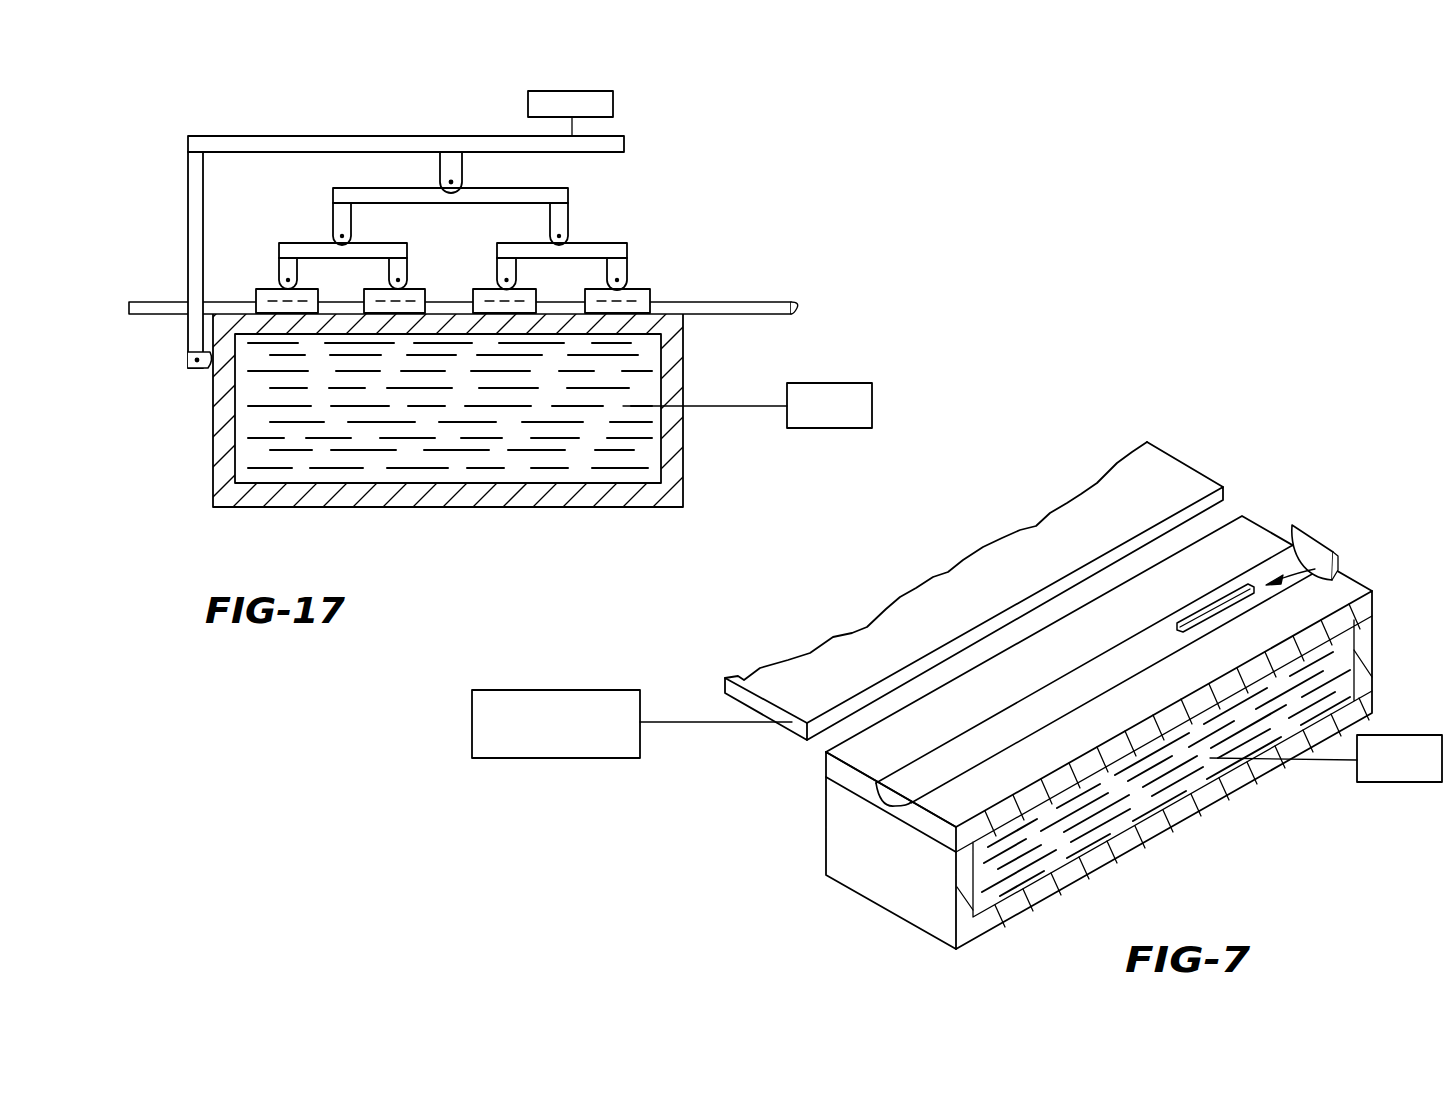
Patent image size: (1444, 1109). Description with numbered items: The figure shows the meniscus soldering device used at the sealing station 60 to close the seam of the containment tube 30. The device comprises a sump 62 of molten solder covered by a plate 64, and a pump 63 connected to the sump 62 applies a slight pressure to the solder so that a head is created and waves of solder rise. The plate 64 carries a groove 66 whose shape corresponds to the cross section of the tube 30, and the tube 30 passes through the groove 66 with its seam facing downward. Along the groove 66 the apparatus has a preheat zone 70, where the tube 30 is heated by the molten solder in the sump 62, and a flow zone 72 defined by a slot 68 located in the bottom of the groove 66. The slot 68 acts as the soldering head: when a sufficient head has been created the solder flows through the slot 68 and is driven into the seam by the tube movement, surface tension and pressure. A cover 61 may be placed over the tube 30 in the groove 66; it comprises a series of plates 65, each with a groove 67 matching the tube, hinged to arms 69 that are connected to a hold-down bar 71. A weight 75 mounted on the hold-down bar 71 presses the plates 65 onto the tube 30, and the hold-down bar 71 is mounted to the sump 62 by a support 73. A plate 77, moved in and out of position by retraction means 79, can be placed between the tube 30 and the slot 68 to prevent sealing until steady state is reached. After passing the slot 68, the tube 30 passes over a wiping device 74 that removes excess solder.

In FIG. 17, the containment tube 30 is at (150, 302).
In FIG. 7, the sealing station 60 is at (1262, 497).
In FIG. 17, the cover 61 is at (291, 130).
In FIG. 17, the sump 62 is at (668, 488).
In FIG. 7, the sump 62 is at (1238, 776).
In FIG. 17, the pump 63 is at (818, 428).
In FIG. 7, the pump 63 is at (1390, 782).
In FIG. 7, the plate 64 is at (830, 762).
In FIG. 17, the plates 65 is at (370, 282).
In FIG. 7, the groove 66 is at (915, 787).
In FIG. 17, the groove 67 is at (650, 292).
In FIG. 7, the slot 68 is at (1213, 612).
In FIG. 17, the arms 69 is at (497, 252).
In FIG. 7, the preheat zone 70 is at (1006, 724).
In FIG. 17, the hold-down bar 71 is at (430, 140).
In FIG. 7, the flow zone 72 is at (1340, 574).
In FIG. 17, the support 73 is at (188, 203).
In FIG. 7, the wiping device 74 is at (1328, 536).
In FIG. 17, the weight 75 is at (614, 102).
In FIG. 7, the plate 77 is at (1178, 464).
In FIG. 7, the retraction means 79 is at (622, 758).